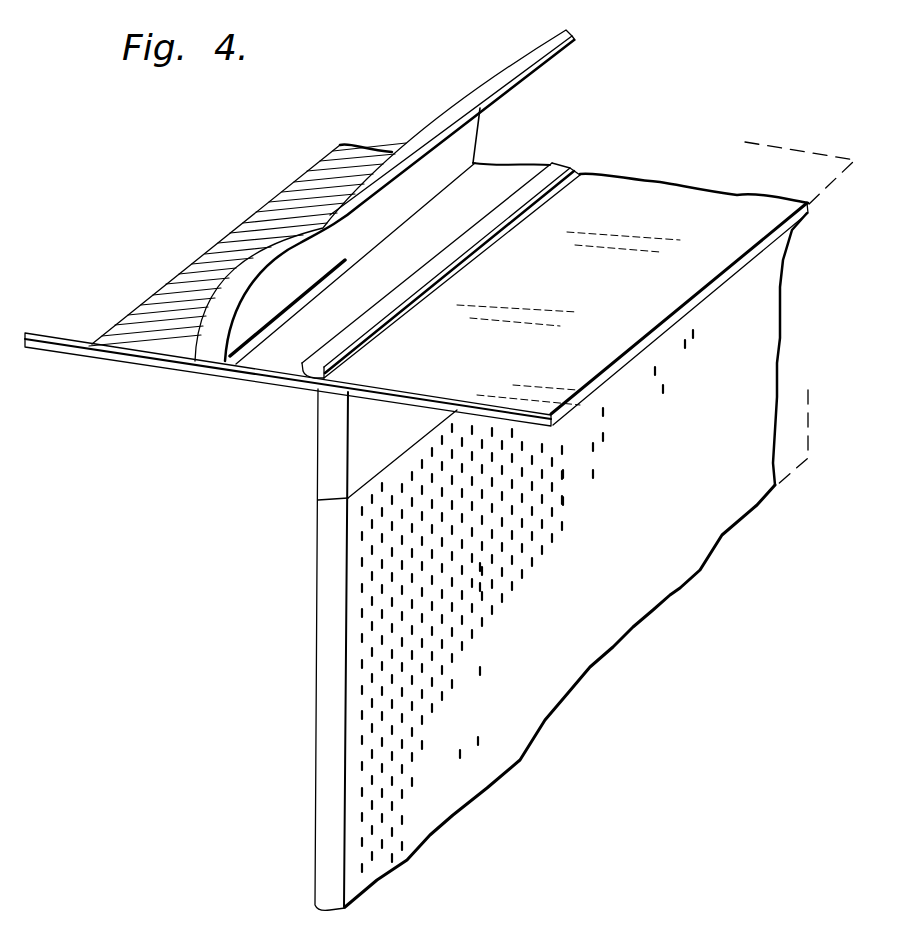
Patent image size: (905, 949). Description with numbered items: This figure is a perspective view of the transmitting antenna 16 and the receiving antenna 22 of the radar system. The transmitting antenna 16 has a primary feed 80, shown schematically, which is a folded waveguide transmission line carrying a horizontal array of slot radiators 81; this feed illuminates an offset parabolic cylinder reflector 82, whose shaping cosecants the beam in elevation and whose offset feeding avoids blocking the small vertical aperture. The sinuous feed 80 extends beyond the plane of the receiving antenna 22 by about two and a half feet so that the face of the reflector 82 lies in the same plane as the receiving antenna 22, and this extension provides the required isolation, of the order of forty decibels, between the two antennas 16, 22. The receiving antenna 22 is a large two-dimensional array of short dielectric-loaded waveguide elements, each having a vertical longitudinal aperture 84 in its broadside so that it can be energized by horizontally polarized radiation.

The transmitting antenna 16 is at (200, 202).
The receiving antenna 22 is at (315, 740).
The primary feed 80 is at (165, 367).
The slot radiators 81 is at (310, 378).
The offset parabolic cylinder reflector 82 is at (435, 117).
The longitudinal aperture 84 is at (552, 533).